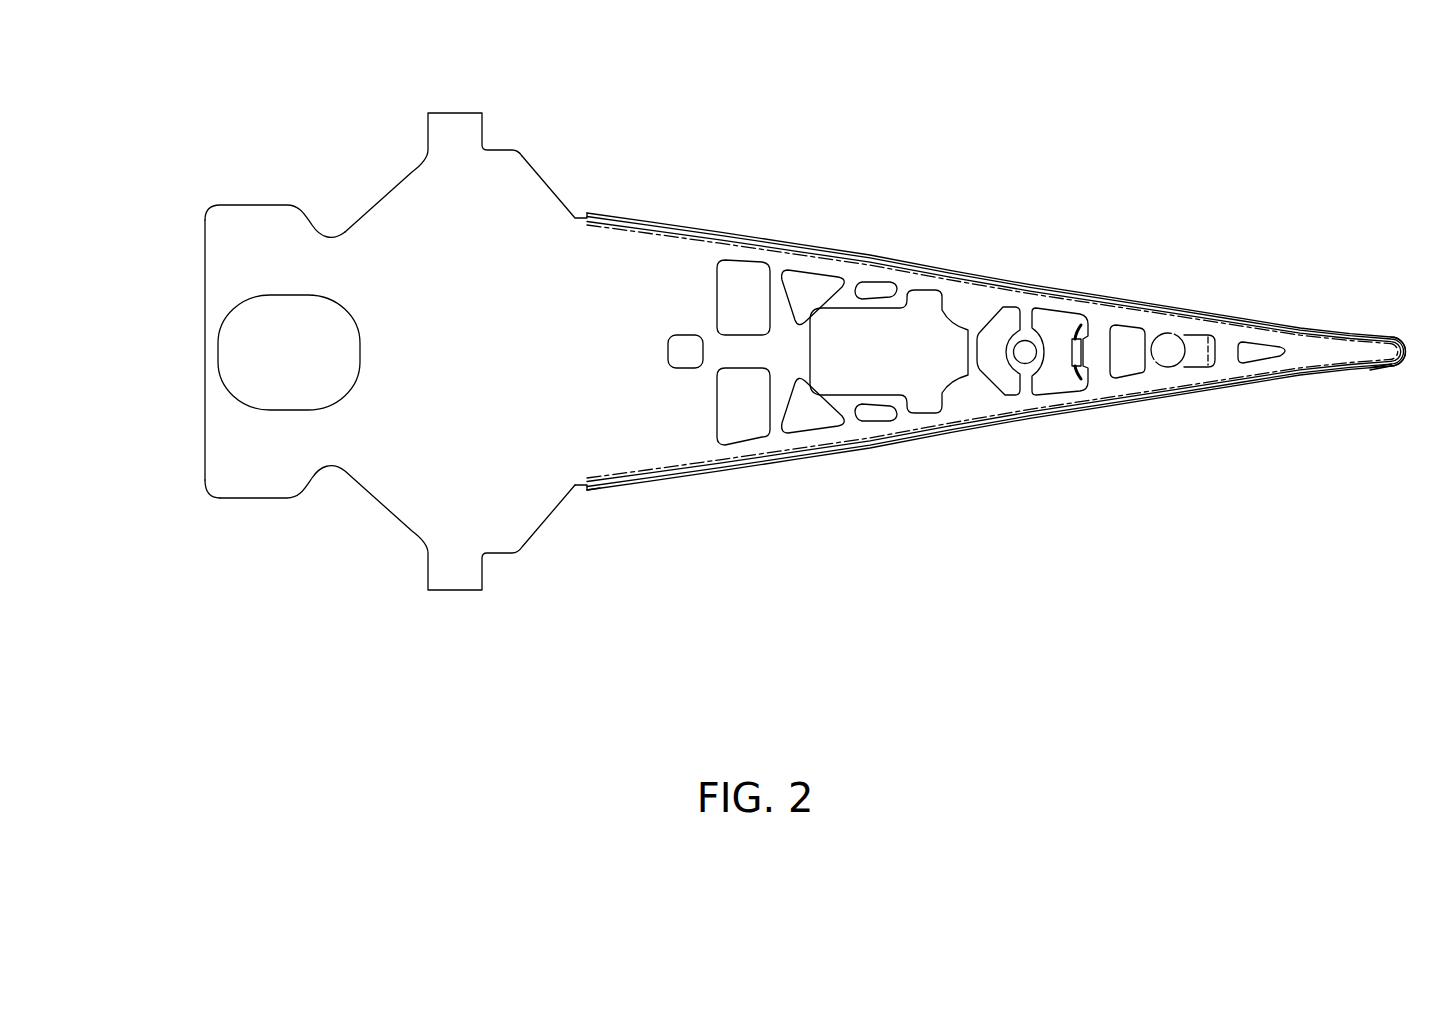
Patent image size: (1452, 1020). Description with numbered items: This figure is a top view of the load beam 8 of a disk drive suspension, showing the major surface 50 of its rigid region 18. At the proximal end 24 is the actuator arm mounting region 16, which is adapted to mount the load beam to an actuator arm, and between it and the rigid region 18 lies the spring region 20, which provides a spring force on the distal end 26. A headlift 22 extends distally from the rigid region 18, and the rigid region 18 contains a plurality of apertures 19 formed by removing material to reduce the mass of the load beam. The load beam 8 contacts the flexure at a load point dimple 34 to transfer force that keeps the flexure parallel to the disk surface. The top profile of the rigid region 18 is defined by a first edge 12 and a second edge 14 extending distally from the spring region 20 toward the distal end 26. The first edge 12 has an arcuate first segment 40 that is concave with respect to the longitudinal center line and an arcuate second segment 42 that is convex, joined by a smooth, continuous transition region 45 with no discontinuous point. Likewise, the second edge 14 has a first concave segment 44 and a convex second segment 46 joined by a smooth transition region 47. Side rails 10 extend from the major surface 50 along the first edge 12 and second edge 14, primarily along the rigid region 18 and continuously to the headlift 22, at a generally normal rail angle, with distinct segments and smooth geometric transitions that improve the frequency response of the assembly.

The load beam 8 is at (533, 619).
The side rails 10 is at (731, 224).
The first edge 12 is at (938, 272).
The second edge 14 is at (973, 423).
The actuator arm mounting region 16 is at (262, 212).
The rigid region 18 is at (858, 274).
The apertures 19 is at (752, 280).
The spring region 20 is at (580, 488).
The headlift 22 is at (1372, 368).
The proximal end 24 is at (198, 492).
The distal end 26 is at (1417, 317).
The load point dimple 34 is at (1175, 366).
The first segment 40 is at (672, 212).
The second segment 42 is at (1117, 299).
The first concave segment 44 is at (690, 481).
The transition region 45 is at (992, 281).
The convex second segment 46 is at (1145, 394).
The transition region 47 is at (993, 419).
The major surface 50 is at (635, 265).